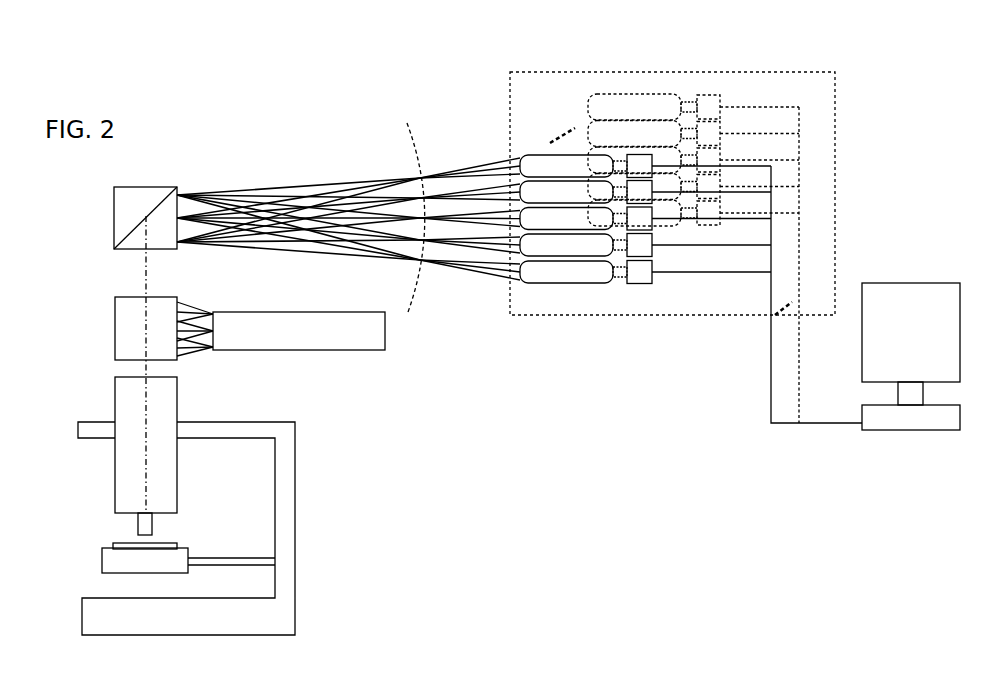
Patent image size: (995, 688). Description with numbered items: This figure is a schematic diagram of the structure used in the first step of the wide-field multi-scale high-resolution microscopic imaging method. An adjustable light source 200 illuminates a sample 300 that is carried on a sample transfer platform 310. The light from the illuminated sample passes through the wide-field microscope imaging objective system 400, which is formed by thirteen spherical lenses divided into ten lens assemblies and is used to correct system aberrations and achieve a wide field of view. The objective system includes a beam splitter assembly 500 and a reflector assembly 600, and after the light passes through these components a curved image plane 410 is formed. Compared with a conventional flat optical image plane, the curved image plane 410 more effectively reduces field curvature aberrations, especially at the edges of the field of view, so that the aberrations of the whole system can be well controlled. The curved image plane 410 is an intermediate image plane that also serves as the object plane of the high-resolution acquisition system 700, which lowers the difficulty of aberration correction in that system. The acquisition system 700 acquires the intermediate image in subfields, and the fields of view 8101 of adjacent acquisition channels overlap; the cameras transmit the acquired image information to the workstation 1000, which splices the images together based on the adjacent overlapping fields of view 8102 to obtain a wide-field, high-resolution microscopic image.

The adjustable light source 200 is at (305, 352).
The sample 300 is at (118, 545).
The sample transfer platform 310 is at (102, 560).
The wide-field microscope imaging objective system 400 is at (115, 475).
The curved image plane 410 is at (408, 204).
The beam splitter assembly 500 is at (115, 329).
The reflector assembly 600 is at (114, 212).
The high-resolution acquisition system 700 is at (675, 72).
The workstation 1000 is at (912, 283).
The fields of view 8101 is at (383, 208).
The adjacent overlapping fields of view 8102 is at (507, 188).